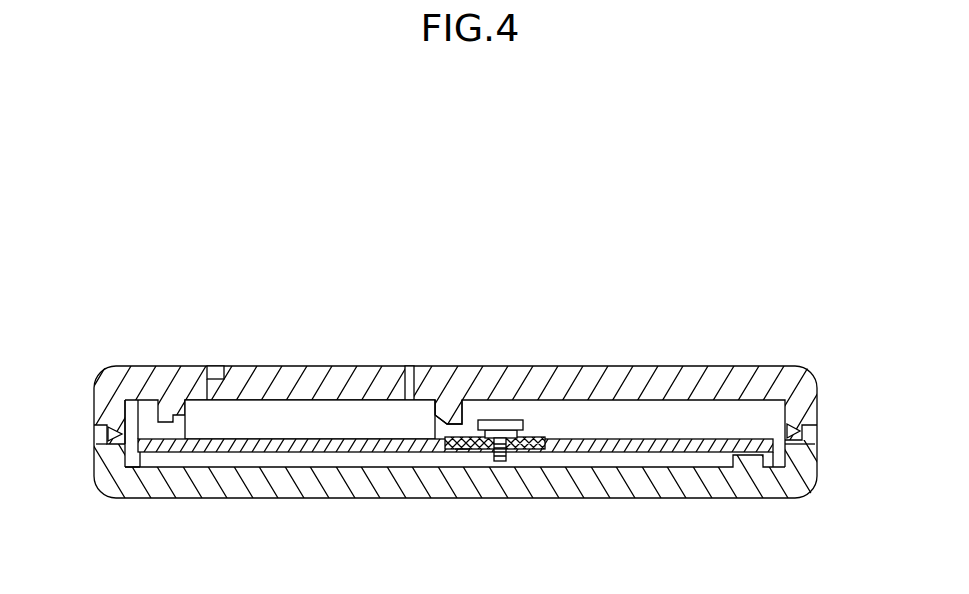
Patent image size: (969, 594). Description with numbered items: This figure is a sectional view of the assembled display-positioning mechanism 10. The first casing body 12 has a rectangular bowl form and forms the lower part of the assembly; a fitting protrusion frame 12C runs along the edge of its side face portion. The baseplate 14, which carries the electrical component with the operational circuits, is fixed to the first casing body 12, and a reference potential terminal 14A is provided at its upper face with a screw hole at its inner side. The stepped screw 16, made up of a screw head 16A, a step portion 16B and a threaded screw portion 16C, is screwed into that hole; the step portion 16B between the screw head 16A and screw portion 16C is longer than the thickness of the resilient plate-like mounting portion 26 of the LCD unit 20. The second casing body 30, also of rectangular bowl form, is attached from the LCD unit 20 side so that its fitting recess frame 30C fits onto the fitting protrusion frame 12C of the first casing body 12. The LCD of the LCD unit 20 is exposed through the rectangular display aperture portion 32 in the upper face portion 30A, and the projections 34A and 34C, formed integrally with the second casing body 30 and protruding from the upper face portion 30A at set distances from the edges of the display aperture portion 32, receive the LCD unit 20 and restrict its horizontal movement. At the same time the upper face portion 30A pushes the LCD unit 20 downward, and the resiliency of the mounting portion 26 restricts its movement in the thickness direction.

The display-positioning mechanism 10 is at (144, 264).
The first casing body 12 is at (761, 503).
The fitting protrusion frame 12C is at (108, 446).
The baseplate 14 is at (133, 452).
The reference potential terminal 14A is at (470, 452).
The stepped screw 16 is at (518, 431).
The screw head 16A is at (524, 421).
The step portion 16B is at (530, 449).
The screw portion 16C is at (502, 462).
The LCD unit 20 is at (317, 420).
The mounting portion 26 is at (537, 431).
The second casing body 30 is at (760, 361).
The upper face portion 30A is at (242, 400).
The fitting recess frame 30C is at (104, 432).
The display aperture portion 32 is at (220, 372).
The projection 34A is at (125, 402).
The projection 34C is at (470, 400).